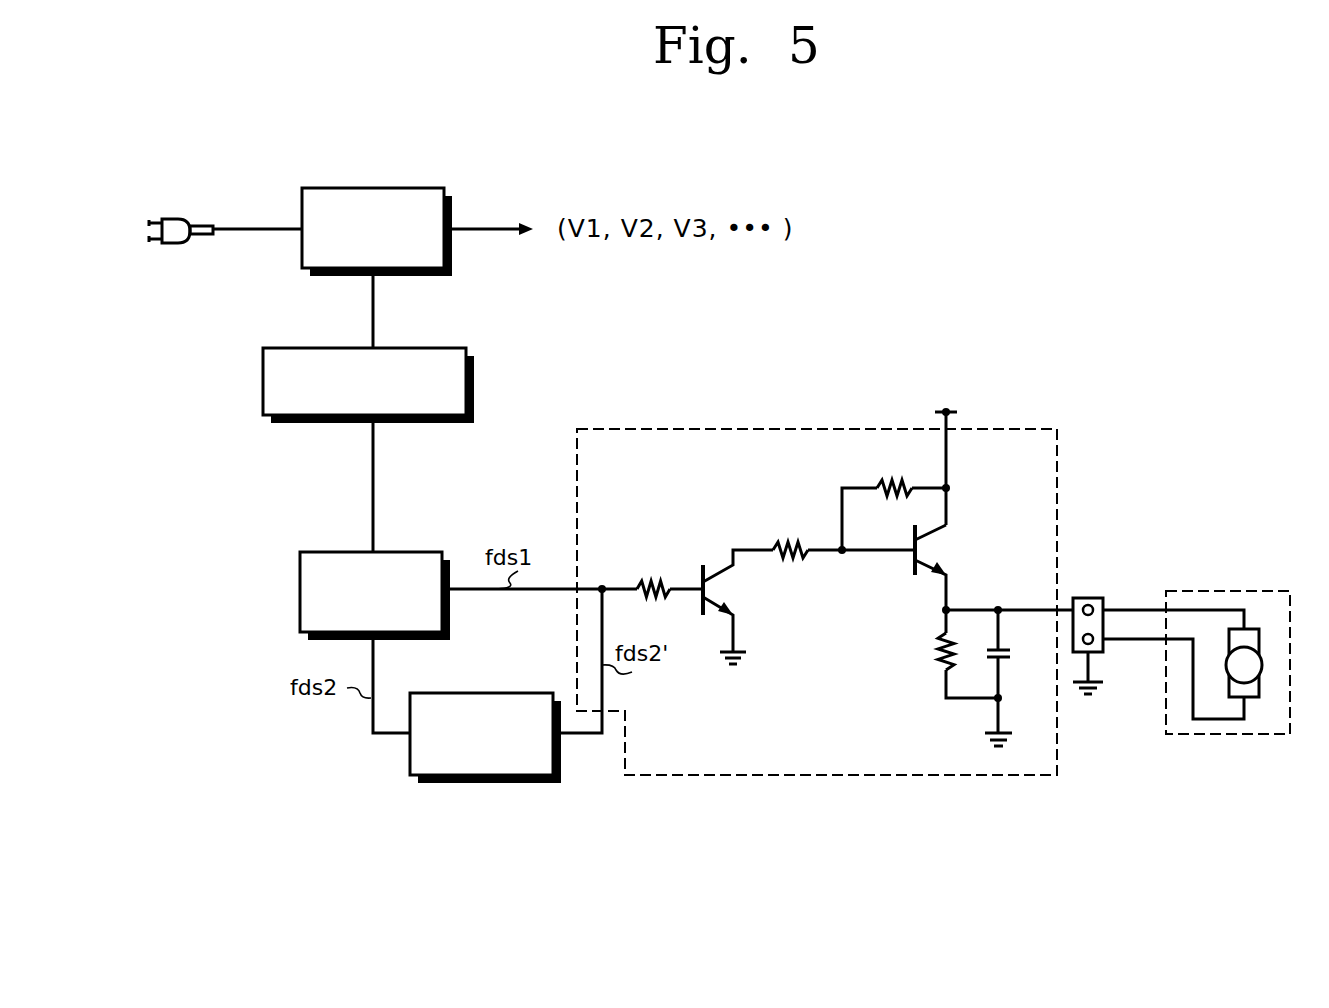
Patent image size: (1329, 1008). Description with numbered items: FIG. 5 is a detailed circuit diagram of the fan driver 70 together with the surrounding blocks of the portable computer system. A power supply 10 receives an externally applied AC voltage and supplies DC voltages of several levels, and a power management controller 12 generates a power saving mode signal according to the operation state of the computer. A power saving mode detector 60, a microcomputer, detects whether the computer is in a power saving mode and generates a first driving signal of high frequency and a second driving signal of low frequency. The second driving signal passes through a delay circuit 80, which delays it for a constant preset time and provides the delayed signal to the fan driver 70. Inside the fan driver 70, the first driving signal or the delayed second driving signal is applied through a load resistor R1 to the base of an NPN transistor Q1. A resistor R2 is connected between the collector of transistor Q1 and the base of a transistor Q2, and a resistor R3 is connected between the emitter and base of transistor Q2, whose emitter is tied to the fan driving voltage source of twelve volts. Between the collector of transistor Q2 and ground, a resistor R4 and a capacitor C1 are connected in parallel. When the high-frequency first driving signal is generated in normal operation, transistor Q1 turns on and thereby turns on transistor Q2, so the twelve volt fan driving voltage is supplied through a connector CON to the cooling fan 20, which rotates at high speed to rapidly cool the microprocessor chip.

The power supply 10 is at (362, 188).
The power management controller 12 is at (263, 393).
The power saving mode detector 60 is at (316, 552).
The delay circuit 80 is at (500, 783).
The fan driver 70 is at (1010, 428).
The cooling fan 20 is at (1247, 591).
The load resistor R1 is at (653, 573).
The resistor R2 is at (790, 536).
The resistor R3 is at (894, 500).
The resistor R4 is at (946, 654).
The NPN transistor Q1 is at (721, 607).
The transistor Q2 is at (949, 567).
The capacitor C1 is at (1015, 678).
The connector CON is at (1091, 632).